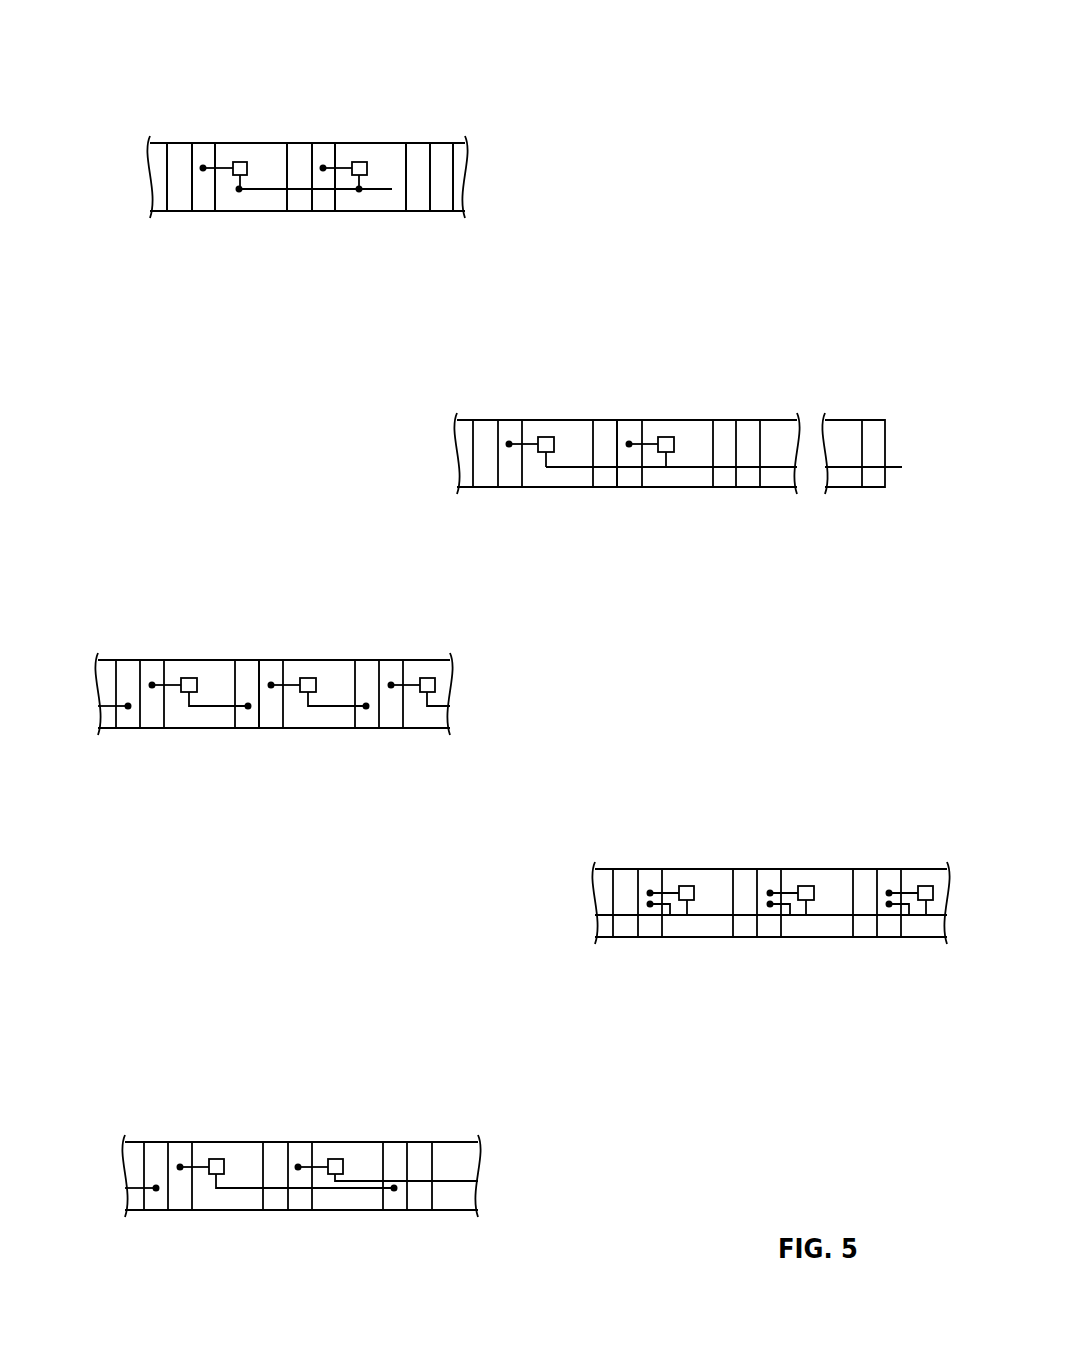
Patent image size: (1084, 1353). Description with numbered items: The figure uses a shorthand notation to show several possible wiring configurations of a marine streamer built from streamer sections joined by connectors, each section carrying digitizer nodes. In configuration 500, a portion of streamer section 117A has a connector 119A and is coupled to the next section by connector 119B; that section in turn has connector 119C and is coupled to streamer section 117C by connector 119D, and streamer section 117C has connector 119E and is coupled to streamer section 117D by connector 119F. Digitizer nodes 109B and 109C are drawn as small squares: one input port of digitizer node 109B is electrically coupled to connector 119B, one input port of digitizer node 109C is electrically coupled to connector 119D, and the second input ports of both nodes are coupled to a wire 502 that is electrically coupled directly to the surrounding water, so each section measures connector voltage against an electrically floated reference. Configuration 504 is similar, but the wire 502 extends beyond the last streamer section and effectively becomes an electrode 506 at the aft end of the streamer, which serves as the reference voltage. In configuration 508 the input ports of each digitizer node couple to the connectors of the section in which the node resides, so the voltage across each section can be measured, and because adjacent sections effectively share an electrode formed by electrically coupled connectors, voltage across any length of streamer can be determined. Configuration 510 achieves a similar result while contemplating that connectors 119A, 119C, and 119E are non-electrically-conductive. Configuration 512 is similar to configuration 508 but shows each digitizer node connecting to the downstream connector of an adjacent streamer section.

The configuration 500 is at (120, 40).
The wire 502 is at (382, 191).
The configuration 504 is at (500, 350).
The electrode 506 is at (902, 467).
The configuration 508 is at (143, 590).
The configuration 510 is at (640, 798).
The configuration 512 is at (170, 1073).
The digitizer node 109B is at (240, 160).
The digitizer node 109C is at (358, 160).
The streamer section 117A is at (180, 142).
The streamer section 117C is at (382, 142).
The streamer section 117D is at (463, 142).
The connector 119A is at (180, 213).
The connector 119B is at (205, 213).
The connector 119C is at (300, 213).
The connector 119D is at (322, 213).
The connector 119E is at (417, 213).
The connector 119F is at (445, 213).